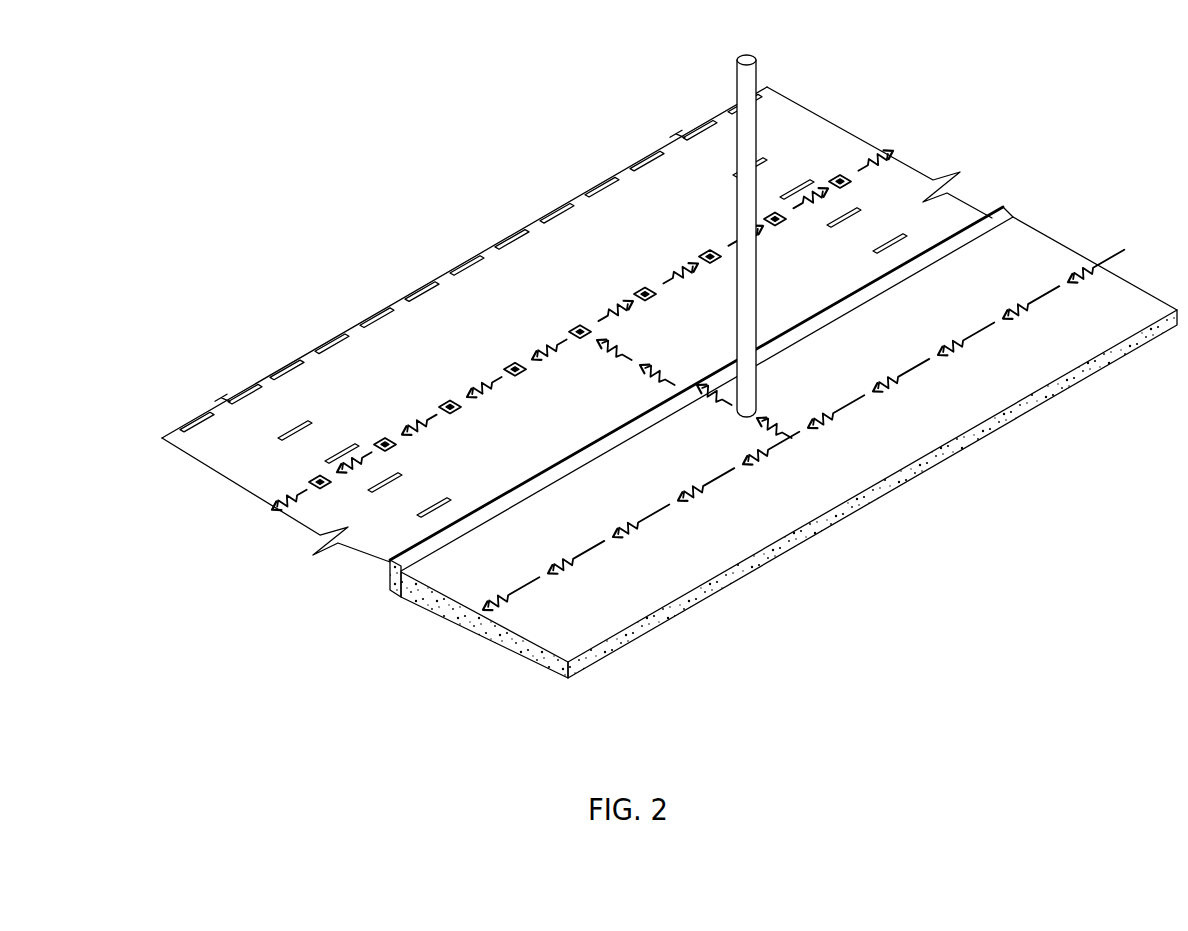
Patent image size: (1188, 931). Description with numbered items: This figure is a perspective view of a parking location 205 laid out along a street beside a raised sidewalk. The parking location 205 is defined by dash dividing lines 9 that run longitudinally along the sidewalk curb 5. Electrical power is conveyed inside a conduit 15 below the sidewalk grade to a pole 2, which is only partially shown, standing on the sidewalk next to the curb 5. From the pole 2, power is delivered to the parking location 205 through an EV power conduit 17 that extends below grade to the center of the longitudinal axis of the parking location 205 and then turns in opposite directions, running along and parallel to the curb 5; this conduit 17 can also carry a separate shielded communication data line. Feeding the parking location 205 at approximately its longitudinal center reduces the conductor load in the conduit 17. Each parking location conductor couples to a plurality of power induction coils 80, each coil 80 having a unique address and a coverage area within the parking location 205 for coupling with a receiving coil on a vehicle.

The pole 2 is at (735, 90).
The sidewalk curb 5 is at (828, 308).
The dash dividing lines 9 is at (417, 288).
The conduit 15 is at (595, 560).
The EV power conduit 17 is at (668, 268).
The power induction coils 80 is at (783, 223).
The parking location 205 is at (552, 323).